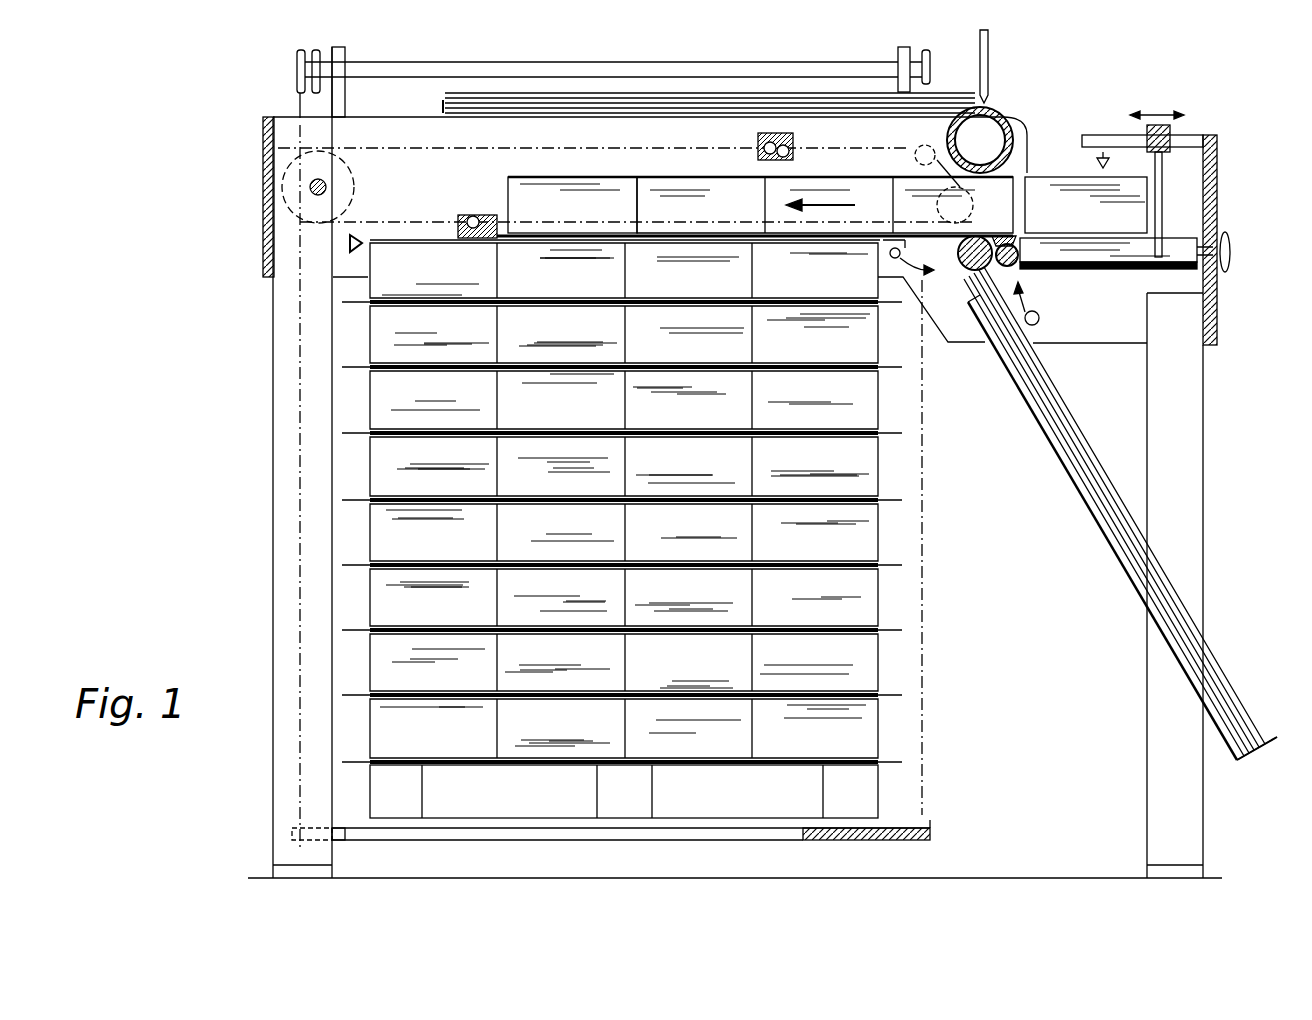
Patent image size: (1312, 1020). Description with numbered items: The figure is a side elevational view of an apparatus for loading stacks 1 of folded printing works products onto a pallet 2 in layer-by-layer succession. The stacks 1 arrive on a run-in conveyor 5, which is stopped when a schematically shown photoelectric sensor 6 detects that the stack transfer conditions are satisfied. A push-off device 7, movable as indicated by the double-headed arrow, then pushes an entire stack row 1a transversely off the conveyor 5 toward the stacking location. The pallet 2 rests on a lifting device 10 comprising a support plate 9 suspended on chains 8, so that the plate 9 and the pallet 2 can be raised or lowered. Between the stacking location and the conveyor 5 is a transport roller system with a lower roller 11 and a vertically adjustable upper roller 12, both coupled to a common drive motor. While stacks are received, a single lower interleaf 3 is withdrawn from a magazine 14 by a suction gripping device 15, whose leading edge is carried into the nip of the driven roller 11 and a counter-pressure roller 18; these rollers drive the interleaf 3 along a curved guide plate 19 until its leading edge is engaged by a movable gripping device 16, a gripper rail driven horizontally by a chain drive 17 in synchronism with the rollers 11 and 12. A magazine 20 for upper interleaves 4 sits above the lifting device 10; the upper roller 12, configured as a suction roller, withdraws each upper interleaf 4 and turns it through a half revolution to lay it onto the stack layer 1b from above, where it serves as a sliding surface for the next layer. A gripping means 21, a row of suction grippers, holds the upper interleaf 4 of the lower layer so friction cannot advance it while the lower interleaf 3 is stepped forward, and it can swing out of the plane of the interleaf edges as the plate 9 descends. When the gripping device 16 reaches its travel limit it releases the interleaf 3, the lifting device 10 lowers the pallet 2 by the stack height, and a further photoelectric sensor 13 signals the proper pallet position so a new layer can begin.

The stacks of folded sheets of paper 1 is at (1060, 190).
The stack row 1a is at (572, 205).
The stack layer 1b is at (488, 200).
The pallet 2 is at (380, 797).
The lower interleaf 3 is at (503, 240).
The upper interleaf 4 is at (943, 93).
The run-in conveyor 5 is at (1180, 250).
The sensor 6 is at (1106, 158).
The push-off device 7 is at (1162, 183).
The chains 8 is at (300, 618).
The support plate 9 is at (935, 827).
The lifting device 10 is at (948, 728).
The lower roller 11 is at (977, 275).
The upper roller 12 is at (1000, 112).
The sensor 13 is at (350, 243).
The magazine 14 is at (1236, 654).
The gripping device 15 is at (1040, 320).
The gripping device 16 is at (455, 228).
The chain drive 17 is at (290, 152).
The counter-pressure roller 18 is at (1007, 270).
The curved guide plate 19 is at (1010, 234).
The magazine 20 is at (546, 86).
The gripping means 21 is at (897, 300).